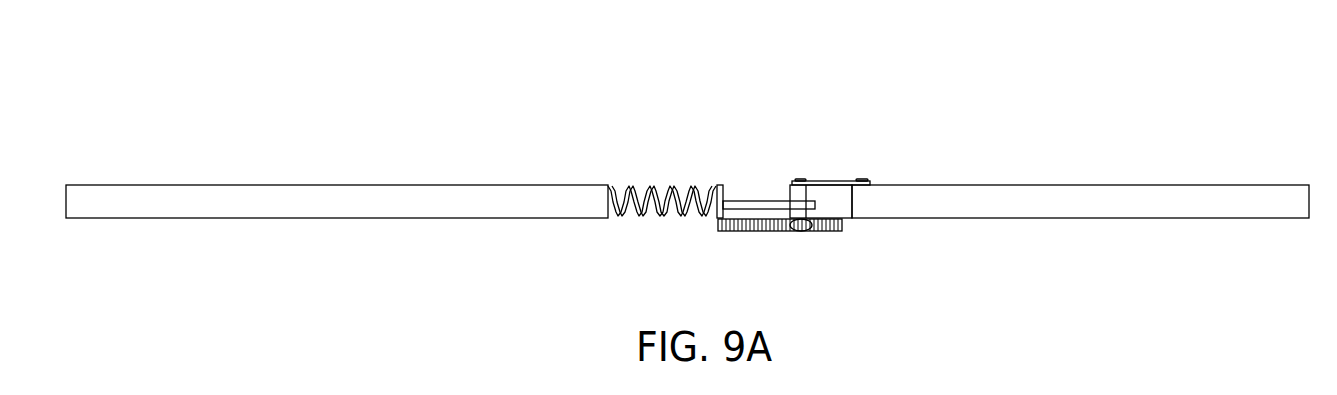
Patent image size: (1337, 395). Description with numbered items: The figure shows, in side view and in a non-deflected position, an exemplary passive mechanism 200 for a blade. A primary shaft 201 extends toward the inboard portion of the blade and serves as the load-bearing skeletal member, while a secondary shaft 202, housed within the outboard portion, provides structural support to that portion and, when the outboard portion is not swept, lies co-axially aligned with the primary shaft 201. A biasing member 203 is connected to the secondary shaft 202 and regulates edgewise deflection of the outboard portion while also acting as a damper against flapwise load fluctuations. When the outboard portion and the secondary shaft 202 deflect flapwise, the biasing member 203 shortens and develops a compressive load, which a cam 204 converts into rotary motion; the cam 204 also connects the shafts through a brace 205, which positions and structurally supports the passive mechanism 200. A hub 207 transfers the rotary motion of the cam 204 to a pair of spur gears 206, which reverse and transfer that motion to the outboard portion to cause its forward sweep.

The passive mechanism 200 is at (198, 57).
The primary shaft 201 is at (1103, 187).
The secondary shaft 202 is at (399, 185).
The biasing member 203 is at (657, 184).
The cam 204 is at (760, 190).
The brace 205 is at (832, 181).
The spur gears 206 is at (773, 232).
The hub 207 is at (815, 198).